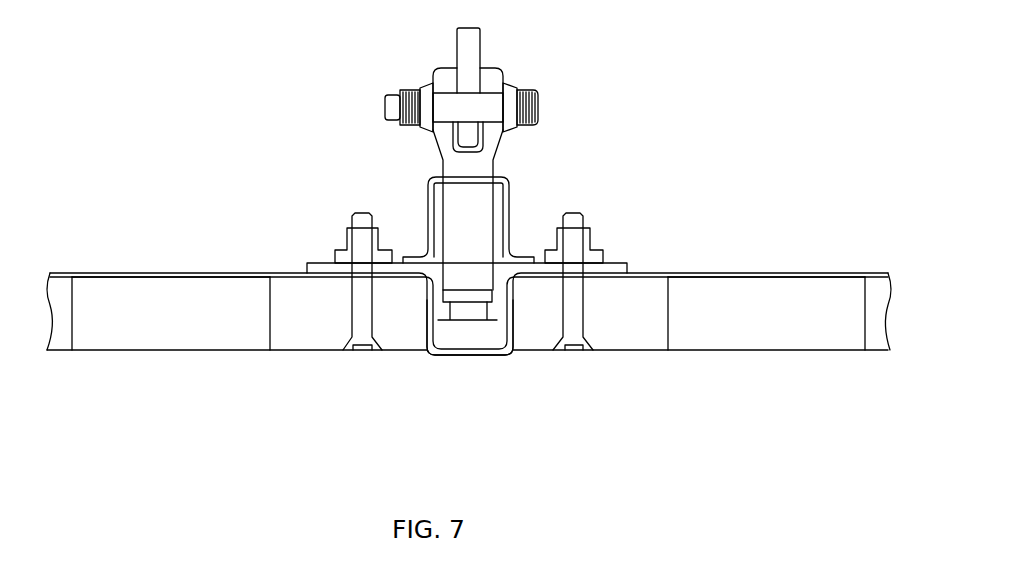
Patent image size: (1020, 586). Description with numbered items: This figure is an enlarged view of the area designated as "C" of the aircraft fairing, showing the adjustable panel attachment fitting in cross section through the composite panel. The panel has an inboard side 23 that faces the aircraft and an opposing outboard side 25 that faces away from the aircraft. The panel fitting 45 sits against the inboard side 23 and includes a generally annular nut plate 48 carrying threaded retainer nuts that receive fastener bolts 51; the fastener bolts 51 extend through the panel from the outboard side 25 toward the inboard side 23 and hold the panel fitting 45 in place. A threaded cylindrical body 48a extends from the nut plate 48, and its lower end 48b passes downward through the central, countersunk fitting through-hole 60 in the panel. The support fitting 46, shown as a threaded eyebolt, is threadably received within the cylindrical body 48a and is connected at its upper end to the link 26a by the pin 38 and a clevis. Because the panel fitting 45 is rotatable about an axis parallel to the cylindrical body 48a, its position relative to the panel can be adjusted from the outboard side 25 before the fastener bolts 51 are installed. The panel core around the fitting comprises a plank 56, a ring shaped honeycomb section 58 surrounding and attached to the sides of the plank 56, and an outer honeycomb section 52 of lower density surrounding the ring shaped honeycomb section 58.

The inboard side 23 is at (820, 273).
The outboard side 25 is at (140, 351).
The link 26a is at (468, 43).
The pin 38 is at (443, 103).
The panel fitting 45 is at (502, 147).
The support fitting 46 is at (477, 203).
The nut plate 48 is at (306, 262).
The cylindrical body 48a is at (432, 205).
The lower end 48b is at (497, 312).
The fastener bolts 51 is at (360, 320).
The honeycomb section 52 is at (63, 292).
The plank 56 is at (292, 332).
The ring shaped honeycomb section 58 is at (140, 305).
The fitting through-hole 60 is at (440, 310).
The area C is at (775, 137).